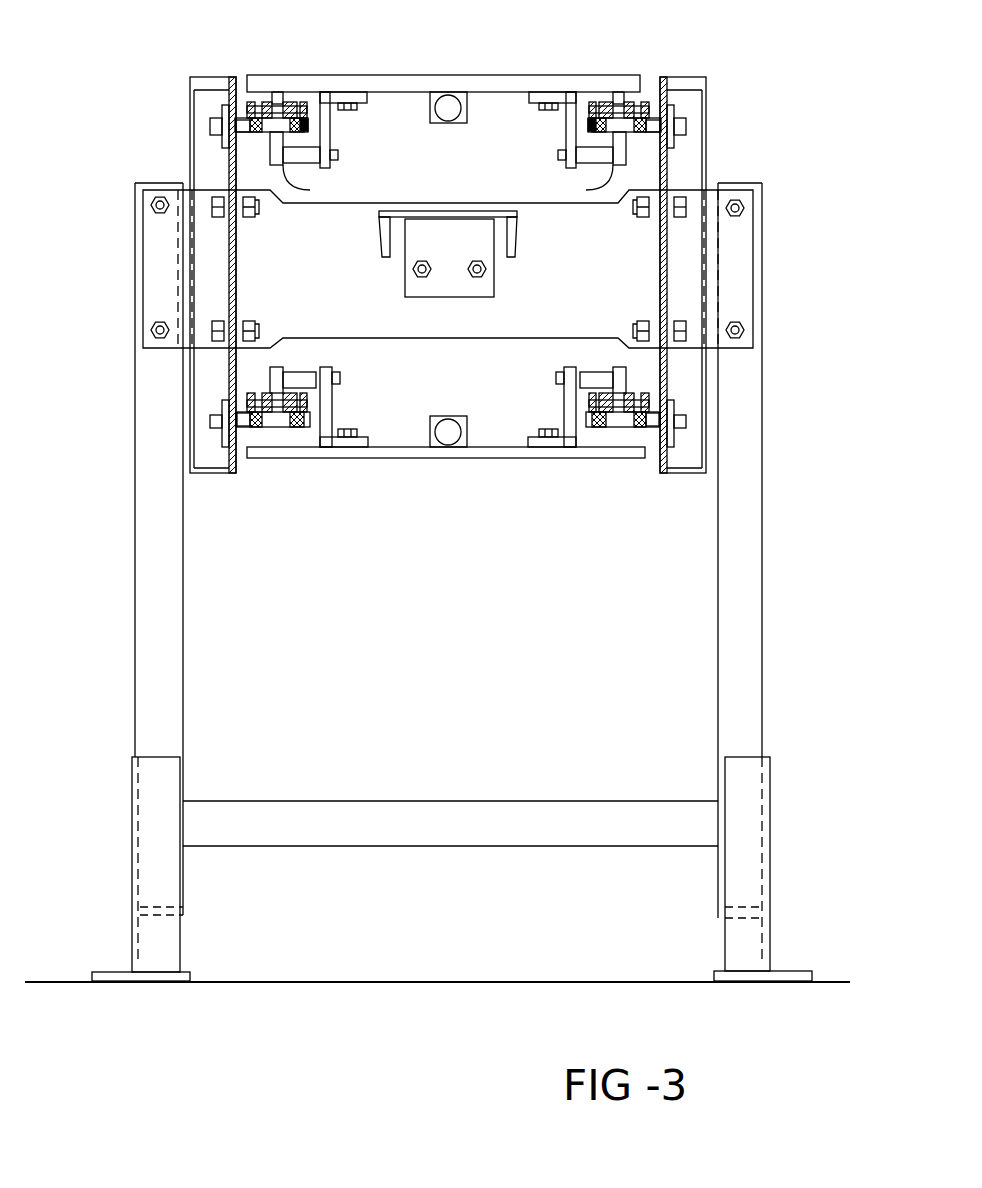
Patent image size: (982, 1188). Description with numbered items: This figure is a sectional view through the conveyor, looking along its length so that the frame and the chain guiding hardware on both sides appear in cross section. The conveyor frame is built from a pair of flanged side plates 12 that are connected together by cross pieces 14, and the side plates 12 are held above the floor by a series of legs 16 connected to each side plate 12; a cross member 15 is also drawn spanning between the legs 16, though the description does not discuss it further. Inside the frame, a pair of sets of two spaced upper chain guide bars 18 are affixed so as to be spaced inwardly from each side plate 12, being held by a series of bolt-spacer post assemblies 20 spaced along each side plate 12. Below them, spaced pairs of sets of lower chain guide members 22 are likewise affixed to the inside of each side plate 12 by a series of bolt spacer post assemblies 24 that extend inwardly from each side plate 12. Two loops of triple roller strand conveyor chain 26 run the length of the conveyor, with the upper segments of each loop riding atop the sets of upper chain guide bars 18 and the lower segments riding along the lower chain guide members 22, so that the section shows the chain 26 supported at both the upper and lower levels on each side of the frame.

The flanged side plate 12 is at (236, 40).
The cross piece 14 is at (578, 323).
The cross beam 15 is at (576, 762).
The leg 16 is at (132, 689).
The upper chain guide bar 18 is at (255, 132).
The bolt-spacer post assembly 20 is at (673, 128).
The lower chain guide member 22 is at (257, 428).
The bolt spacer post assembly 24 is at (222, 411).
The triple roller strand conveyor chain 26 is at (295, 93).